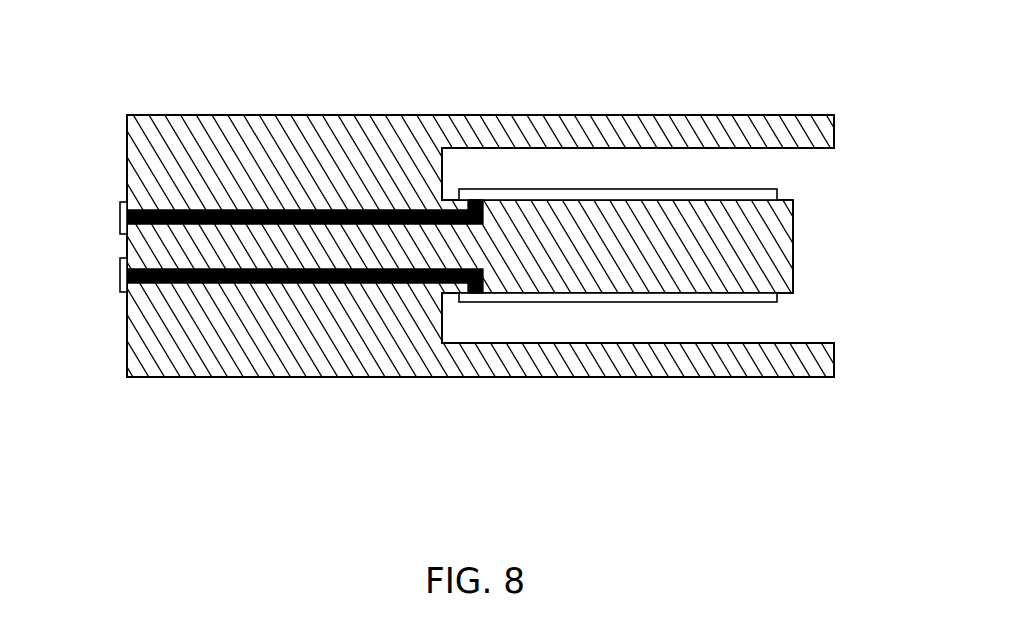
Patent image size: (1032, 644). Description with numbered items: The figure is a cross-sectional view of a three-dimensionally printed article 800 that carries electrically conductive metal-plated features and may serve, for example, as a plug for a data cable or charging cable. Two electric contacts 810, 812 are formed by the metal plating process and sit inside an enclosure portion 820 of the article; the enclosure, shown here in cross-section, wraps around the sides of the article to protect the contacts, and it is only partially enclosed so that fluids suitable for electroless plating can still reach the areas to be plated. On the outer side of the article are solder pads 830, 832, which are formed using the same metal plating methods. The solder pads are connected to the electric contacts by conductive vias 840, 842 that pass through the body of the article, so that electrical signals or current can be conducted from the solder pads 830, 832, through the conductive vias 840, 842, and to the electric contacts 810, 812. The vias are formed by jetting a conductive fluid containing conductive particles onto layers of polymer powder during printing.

The 3D printed article 800 is at (177, 82).
The electric contact 810 is at (777, 194).
The electric contact 812 is at (777, 298).
The enclosure portion 820 is at (820, 125).
The solder pad 830 is at (120, 203).
The solder pad 832 is at (120, 266).
The conductive via 840 is at (327, 210).
The conductive via 842 is at (345, 283).